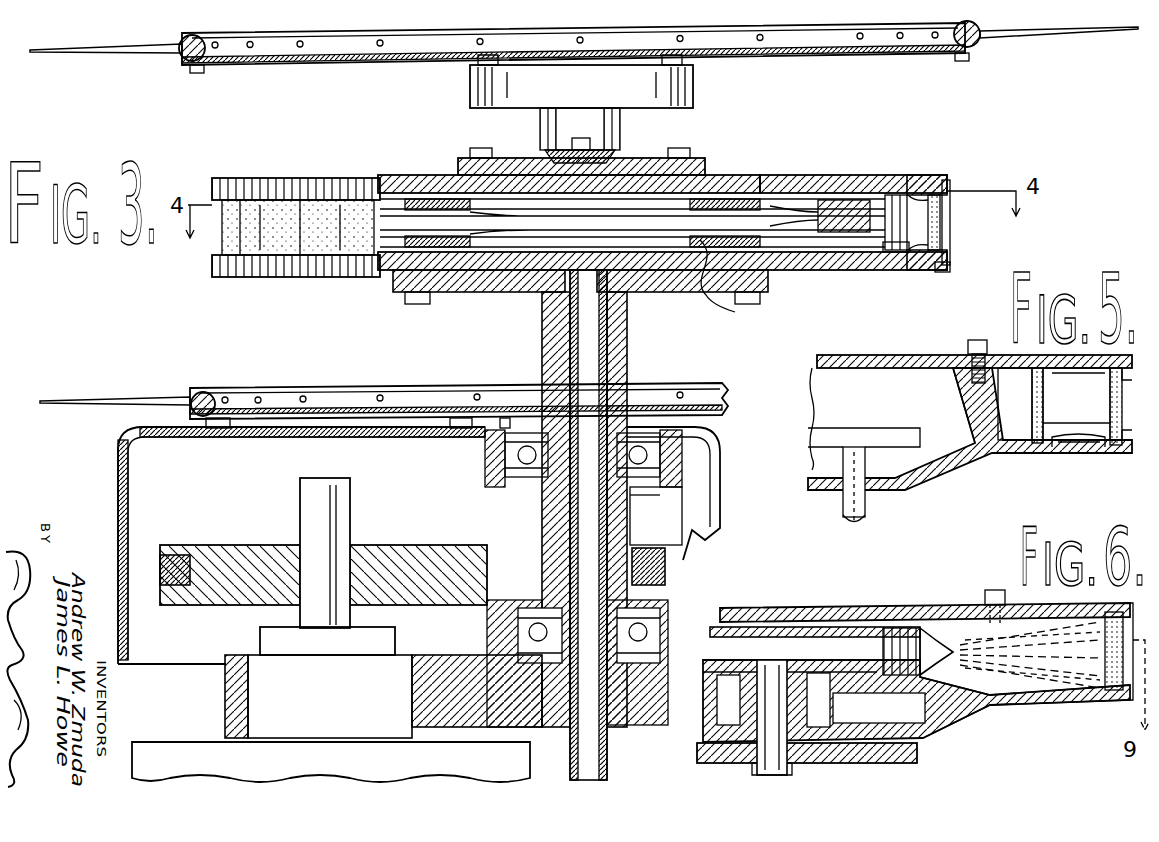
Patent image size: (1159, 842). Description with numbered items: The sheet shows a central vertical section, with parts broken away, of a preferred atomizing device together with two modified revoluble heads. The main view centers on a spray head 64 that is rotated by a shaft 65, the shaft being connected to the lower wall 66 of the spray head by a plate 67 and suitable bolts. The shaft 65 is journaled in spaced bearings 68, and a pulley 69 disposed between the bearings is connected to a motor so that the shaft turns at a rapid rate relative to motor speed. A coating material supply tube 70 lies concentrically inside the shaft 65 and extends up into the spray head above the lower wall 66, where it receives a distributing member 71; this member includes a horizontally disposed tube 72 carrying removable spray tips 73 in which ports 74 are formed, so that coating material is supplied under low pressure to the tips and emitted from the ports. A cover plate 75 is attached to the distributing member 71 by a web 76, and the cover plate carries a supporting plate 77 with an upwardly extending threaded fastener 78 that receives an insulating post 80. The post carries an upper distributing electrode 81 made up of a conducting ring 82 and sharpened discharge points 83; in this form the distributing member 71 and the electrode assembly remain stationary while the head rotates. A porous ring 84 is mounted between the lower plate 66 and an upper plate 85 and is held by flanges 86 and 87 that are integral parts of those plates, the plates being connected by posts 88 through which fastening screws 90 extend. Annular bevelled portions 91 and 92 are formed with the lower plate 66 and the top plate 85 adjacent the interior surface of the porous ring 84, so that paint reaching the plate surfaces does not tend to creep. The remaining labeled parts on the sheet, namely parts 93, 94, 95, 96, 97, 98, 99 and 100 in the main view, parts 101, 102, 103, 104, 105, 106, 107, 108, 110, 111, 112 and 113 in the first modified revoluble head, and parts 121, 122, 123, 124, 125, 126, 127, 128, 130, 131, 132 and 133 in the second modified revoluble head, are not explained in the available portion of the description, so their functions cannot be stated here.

In FIG. 3, the spray head 64 is at (298, 180).
In FIG. 3, the shaft 65 is at (628, 348).
In FIG. 3, the lower wall 66 is at (830, 268).
In FIG. 3, the plate 67 is at (666, 283).
In FIG. 3, the bearings 68 is at (684, 487).
In FIG. 3, the pulley 69 is at (668, 545).
In FIG. 3, the coating material supply tube 70 is at (556, 342).
In FIG. 3, the distributing member 71 is at (522, 193).
In FIG. 3, the horizontally disposed tube 72 is at (500, 248).
In FIG. 3, the removable spray tips 73 is at (832, 200).
In FIG. 3, the ports 74 is at (882, 194).
In FIG. 3, the cover plate 75 is at (455, 165).
In FIG. 3, the web 76 is at (410, 190).
In FIG. 3, the supporting plate 77 is at (692, 157).
In FIG. 3, the threaded fastener 78 is at (622, 128).
In FIG. 3, the insulating post 80 is at (541, 128).
In FIG. 3, the upper distributing electrode 81 is at (872, 64).
In FIG. 3, the conducting ring 82 is at (184, 38).
In FIG. 3, the sharpened discharge points 83 is at (110, 56).
In FIG. 3, the porous ring 84 is at (945, 213).
In FIG. 3, the upper plate 85 is at (790, 176).
In FIG. 3, the flange 86 is at (955, 247).
In FIG. 3, the flange 87 is at (925, 195).
In FIG. 3, the posts 88 is at (880, 262).
In FIG. 3, the fastening screws 90 is at (905, 172).
In FIG. 3, the annular bevelled portion 91 is at (950, 265).
In FIG. 3, the annular bevelled portion 92 is at (940, 174).
In FIG. 3, the connector 93 is at (731, 282).
In FIG. 3, the plate 94 is at (256, 545).
In FIG. 3, the bolt 95 is at (158, 570).
In FIG. 3, the post base 96 is at (300, 612).
In FIG. 3, the base 97 is at (210, 742).
In FIG. 3, the lower bar 98 is at (278, 388).
In FIG. 3, the lower needle 99 is at (97, 400).
In FIG. 3, the clamp 100 is at (200, 425).
In FIG. 5, the nozzle body 101 is at (974, 471).
In FIG. 5, the inlet pipe 102 is at (866, 507).
In FIG. 5, the inlet passage 103 is at (833, 427).
In FIG. 5, the diagonal wall 104 is at (973, 437).
In FIG. 5, the insert 105 is at (1028, 394).
In FIG. 5, the seal 106 is at (1038, 447).
In FIG. 5, the insert 107 is at (1060, 450).
In FIG. 5, the screw 108 is at (986, 343).
In FIG. 3, the shaft 110 is at (608, 750).
In FIG. 5, the shaft 110 is at (1090, 407).
In FIG. 5, the passage 111 is at (1110, 425).
In FIG. 5, the seal 112 is at (1103, 450).
In FIG. 5, the groove 113 is at (1102, 375).
In FIG. 3, the bracket 121 is at (378, 66).
In FIG. 6, the bracket 121 is at (930, 740).
In FIG. 6, the lower wall 122 is at (1050, 703).
In FIG. 6, the top wall 123 is at (943, 610).
In FIG. 6, the plug 124 is at (982, 683).
In FIG. 6, the screw 125 is at (995, 588).
In FIG. 6, the diagonal wall 126 is at (977, 723).
In FIG. 6, the pipe 127 is at (777, 730).
In FIG. 6, the inner wall 128 is at (827, 627).
In FIG. 6, the nozzle cone 130 is at (930, 642).
In FIG. 6, the spray 131 is at (1103, 663).
In FIG. 6, the seal 132 is at (1077, 703).
In FIG. 6, the spray 133 is at (1080, 625).